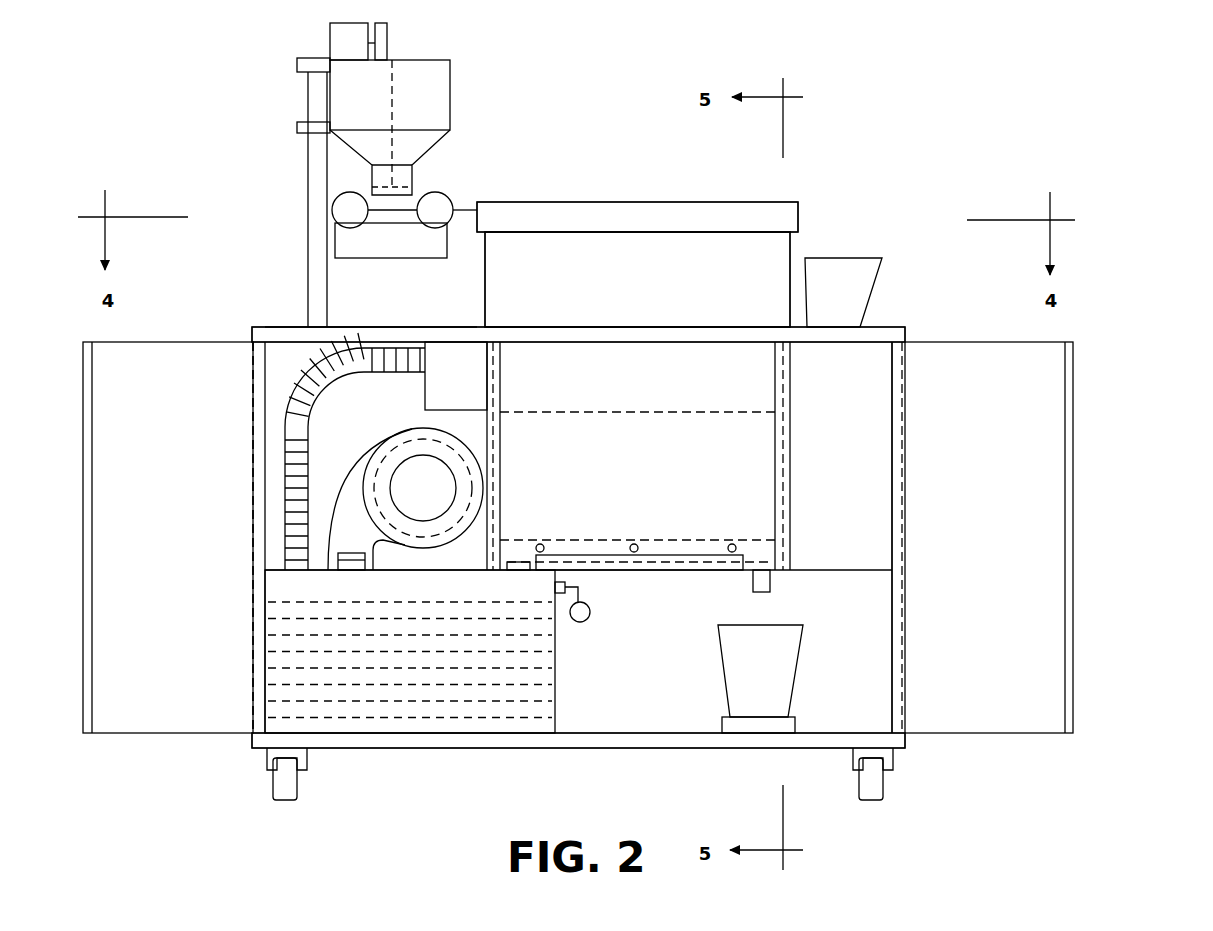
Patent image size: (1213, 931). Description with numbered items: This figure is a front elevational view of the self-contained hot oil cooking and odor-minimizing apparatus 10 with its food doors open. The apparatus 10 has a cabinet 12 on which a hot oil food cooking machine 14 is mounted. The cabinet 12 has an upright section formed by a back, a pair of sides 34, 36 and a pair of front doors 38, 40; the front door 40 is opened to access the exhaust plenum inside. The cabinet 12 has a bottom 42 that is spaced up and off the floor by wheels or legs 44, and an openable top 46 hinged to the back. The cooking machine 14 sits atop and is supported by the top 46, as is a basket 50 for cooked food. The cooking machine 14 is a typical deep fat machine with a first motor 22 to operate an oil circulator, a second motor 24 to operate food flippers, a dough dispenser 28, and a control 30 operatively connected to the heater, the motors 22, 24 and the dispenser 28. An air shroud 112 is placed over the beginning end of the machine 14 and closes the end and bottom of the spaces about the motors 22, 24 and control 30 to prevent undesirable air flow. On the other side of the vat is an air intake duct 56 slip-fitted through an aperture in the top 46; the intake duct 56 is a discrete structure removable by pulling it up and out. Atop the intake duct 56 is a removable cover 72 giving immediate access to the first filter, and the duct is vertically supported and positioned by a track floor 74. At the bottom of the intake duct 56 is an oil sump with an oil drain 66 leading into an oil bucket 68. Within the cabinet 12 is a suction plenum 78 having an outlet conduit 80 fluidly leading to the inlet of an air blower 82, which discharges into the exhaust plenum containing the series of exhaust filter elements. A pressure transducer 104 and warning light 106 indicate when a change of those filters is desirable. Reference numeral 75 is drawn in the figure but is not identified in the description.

The apparatus 10 is at (1080, 144).
The cabinet 12 is at (890, 318).
The hot oil food cooking machine 14 is at (800, 194).
The first motor 22 is at (333, 188).
The second motor 24 is at (460, 188).
The dough dispenser 28 is at (417, 175).
The control 30 is at (337, 237).
The side 34 is at (941, 520).
The side 36 is at (209, 519).
The front door 38 is at (989, 537).
The front door 40 is at (168, 537).
The bottom 42 is at (578, 767).
The wheels or legs 44 is at (572, 791).
The openable top 46 is at (578, 311).
The basket 50 is at (843, 292).
The air intake duct 56 is at (637, 279).
The oil drain 66 is at (770, 580).
The oil bucket 68 is at (760, 679).
The removable cover 72 is at (637, 203).
The track floor 74 is at (638, 530).
The chamber wall 75 is at (682, 456).
The suction plenum 78 is at (410, 686).
The outlet conduit 80 is at (327, 451).
The air blower 82 is at (405, 487).
The pressure transducer 104 is at (599, 630).
The warning light 106 is at (612, 618).
The air shroud 112 is at (371, 304).